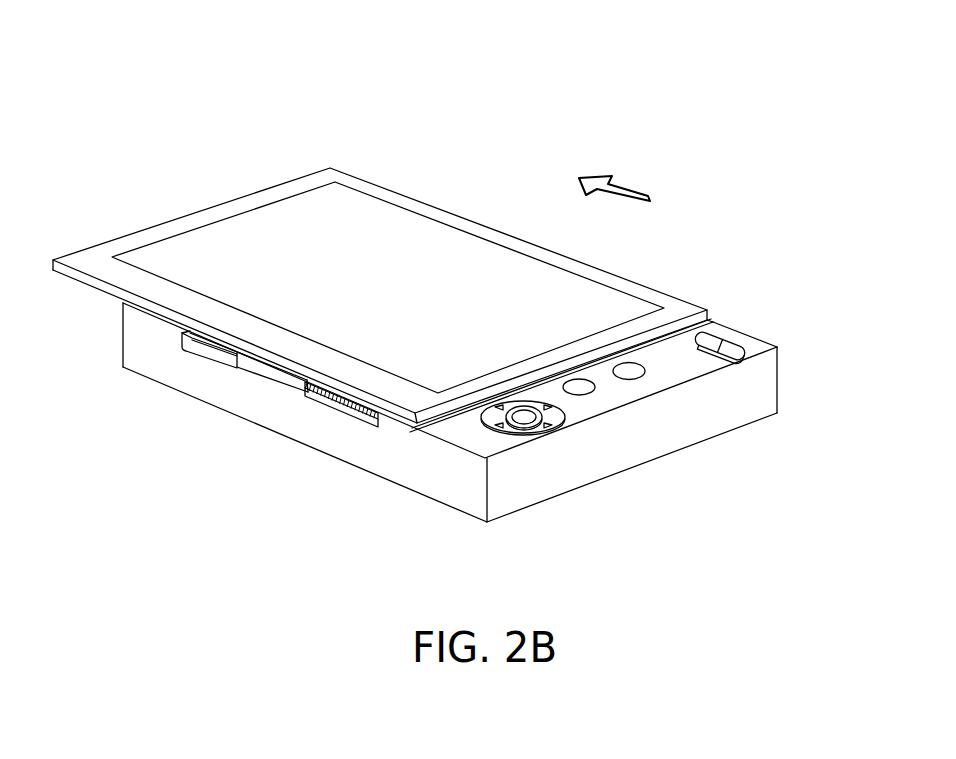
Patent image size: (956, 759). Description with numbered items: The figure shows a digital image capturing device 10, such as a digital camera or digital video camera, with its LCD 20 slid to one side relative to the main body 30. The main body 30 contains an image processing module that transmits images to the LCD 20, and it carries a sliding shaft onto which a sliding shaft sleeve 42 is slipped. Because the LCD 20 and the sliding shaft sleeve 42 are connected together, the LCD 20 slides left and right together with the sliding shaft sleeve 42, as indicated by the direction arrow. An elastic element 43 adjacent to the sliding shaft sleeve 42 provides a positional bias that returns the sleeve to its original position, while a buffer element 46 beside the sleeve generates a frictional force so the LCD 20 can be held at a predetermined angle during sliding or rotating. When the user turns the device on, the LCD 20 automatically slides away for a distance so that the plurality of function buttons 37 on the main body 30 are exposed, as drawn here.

The digital image capturing device 10 is at (439, 286).
The LCD 20 is at (238, 203).
The main body 30 is at (698, 435).
The function buttons 37 is at (588, 437).
The sliding shaft sleeve 42 is at (308, 397).
The elastic element 43 is at (333, 405).
The buffer element 46 is at (263, 368).